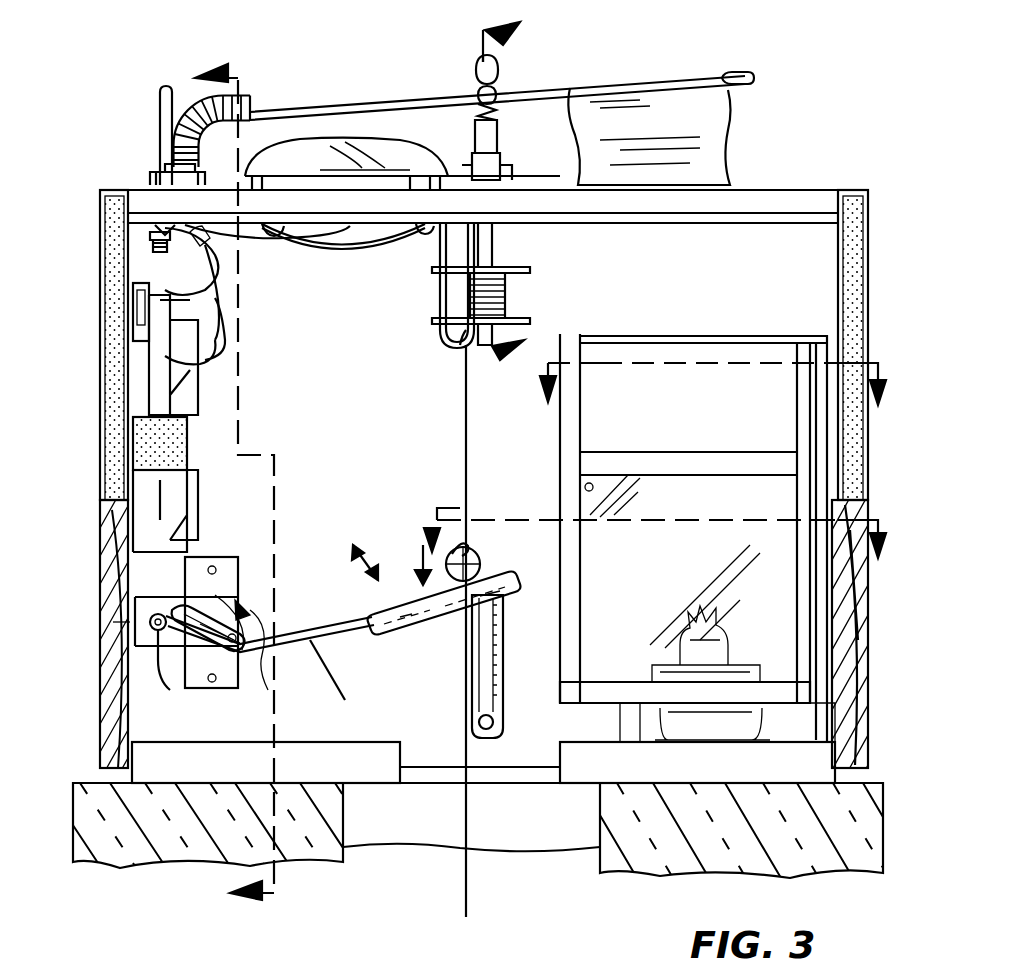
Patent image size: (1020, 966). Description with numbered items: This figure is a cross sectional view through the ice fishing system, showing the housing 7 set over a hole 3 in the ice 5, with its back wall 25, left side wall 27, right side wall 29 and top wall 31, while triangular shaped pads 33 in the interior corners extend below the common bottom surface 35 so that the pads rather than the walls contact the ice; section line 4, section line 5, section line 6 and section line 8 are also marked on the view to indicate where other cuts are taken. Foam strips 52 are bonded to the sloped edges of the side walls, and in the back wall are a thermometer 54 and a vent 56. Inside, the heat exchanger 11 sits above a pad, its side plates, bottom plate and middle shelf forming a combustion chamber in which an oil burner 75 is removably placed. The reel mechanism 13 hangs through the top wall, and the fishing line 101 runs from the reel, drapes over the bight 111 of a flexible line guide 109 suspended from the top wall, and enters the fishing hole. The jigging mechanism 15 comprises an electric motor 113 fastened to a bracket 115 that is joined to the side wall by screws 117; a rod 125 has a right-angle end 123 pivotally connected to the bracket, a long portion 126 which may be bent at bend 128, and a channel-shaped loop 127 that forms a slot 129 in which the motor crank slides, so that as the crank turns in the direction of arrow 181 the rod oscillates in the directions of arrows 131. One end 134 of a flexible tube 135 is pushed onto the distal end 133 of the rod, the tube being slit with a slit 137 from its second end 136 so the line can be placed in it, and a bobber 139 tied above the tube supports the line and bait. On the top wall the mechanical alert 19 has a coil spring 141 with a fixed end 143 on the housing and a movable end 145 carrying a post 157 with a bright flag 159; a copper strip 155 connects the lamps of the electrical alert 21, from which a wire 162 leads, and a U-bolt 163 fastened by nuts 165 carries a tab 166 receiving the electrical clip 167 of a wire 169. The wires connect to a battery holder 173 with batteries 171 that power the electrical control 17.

The hole 3 is at (345, 820).
The section line 4- 4 is at (244, 484).
The ice 5 is at (871, 898).
The section line 6- 6 is at (655, 526).
The housing 7 is at (868, 737).
The section line 8- 8 is at (492, 199).
The heat exchanger 11 is at (578, 612).
The fishing line reel mechanism 13 is at (535, 302).
The fishing line jigging mechanism 15 is at (345, 640).
The electrical control 17 is at (200, 382).
The mechanical alert 19 is at (740, 115).
The electrical alert 21 is at (375, 138).
The back wall 25 is at (762, 281).
The left side wall 27 is at (105, 722).
The right side wall 29 is at (862, 645).
The top wall 31 is at (808, 195).
The triangular shaped pads 33 is at (812, 770).
The bottom surface 35 is at (130, 770).
The foam strips 52 is at (112, 362).
The thermometer 54 is at (496, 724).
The vent 56 is at (540, 498).
The oil burner 75 is at (680, 640).
The fishing line 101 is at (468, 895).
The line guide 109 is at (440, 330).
The bight 111 is at (452, 345).
The electric motor 113 is at (245, 600).
The bracket 115 is at (200, 560).
The screws 117 is at (160, 660).
The right-angle end 123 is at (140, 618).
The rod 125 is at (372, 650).
The long portion 126 is at (346, 678).
The channel-shaped loop 127 is at (140, 600).
The bend 128 is at (262, 662).
The slot 129 is at (200, 650).
The arrows 131 is at (355, 578).
The distal end 133 is at (432, 625).
The tube end 134 is at (372, 617).
The flexible tube 135 is at (424, 568).
The second end 136 is at (565, 585).
The slit 137 is at (500, 622).
The bobber 139 is at (470, 548).
The coil spring 141 is at (196, 102).
The fixed end 143 is at (172, 150).
The movable end 145 is at (252, 92).
The copper strip 155 is at (255, 238).
The post 157 is at (428, 104).
The bright flag 159 is at (640, 108).
The wire 162 is at (338, 230).
The U-bolt 163 is at (160, 96).
The nuts 165 is at (140, 238).
The tab 166 is at (160, 228).
The electrical clip 167 is at (228, 270).
The wire 169 is at (230, 328).
The batteries 171 is at (165, 526).
The battery holder 173 is at (150, 475).
The arrow 181 is at (248, 590).